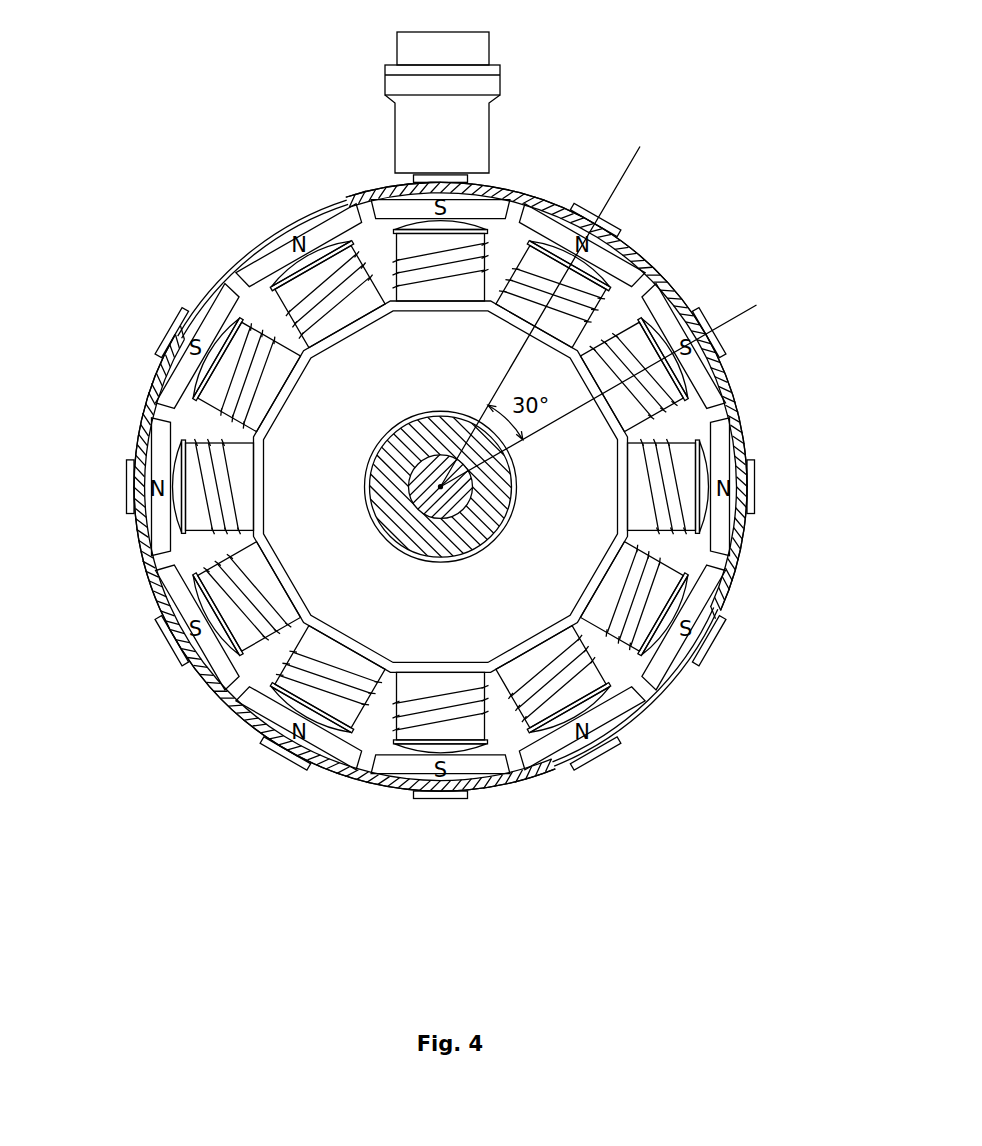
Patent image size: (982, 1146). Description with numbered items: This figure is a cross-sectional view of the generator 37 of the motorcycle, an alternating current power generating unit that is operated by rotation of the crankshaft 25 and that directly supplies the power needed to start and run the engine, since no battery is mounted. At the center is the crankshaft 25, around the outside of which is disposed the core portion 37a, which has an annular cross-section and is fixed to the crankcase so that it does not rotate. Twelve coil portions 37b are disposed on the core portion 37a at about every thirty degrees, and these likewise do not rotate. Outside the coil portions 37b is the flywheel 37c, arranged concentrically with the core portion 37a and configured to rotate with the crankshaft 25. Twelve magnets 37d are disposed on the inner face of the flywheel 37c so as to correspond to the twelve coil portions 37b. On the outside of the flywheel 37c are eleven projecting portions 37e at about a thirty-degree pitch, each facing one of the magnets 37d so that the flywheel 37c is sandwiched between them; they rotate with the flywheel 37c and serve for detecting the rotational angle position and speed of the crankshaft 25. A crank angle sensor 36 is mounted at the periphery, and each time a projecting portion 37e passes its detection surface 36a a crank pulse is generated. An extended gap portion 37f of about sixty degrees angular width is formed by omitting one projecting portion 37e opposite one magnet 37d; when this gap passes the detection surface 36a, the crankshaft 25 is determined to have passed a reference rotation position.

The crankshaft 25 is at (445, 462).
The crank angle sensor 36 is at (375, 98).
The detection surface 36a is at (400, 181).
The generator 37 is at (746, 205).
The core portion 37a is at (418, 537).
The coil portions 37b is at (347, 272).
The flywheel 37c is at (240, 290).
The magnets 37d is at (358, 219).
The projecting portions 37e is at (473, 180).
The extended gap portion 37f is at (240, 257).